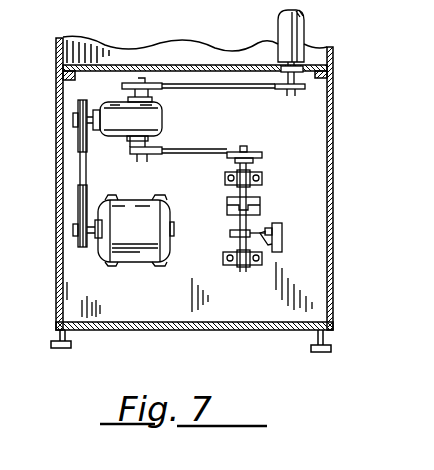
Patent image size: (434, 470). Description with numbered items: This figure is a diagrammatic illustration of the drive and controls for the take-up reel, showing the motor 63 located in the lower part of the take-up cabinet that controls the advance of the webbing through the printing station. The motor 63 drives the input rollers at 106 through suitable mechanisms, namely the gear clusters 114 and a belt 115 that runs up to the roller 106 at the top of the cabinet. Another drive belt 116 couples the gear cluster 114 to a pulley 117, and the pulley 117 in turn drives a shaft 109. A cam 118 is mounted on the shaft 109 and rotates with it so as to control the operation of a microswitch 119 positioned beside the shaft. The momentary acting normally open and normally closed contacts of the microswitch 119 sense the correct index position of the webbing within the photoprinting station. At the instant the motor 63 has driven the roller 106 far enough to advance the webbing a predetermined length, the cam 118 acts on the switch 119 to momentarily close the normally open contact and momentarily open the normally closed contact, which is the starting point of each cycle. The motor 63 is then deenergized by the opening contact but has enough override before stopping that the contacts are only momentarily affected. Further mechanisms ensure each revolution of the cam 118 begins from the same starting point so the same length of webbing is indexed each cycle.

The input rollers 106 is at (305, 22).
The gear clusters 114 is at (162, 119).
The belt 115 is at (253, 92).
The drive belt 116 is at (190, 158).
The pulley 117 is at (258, 153).
The shaft 109 is at (240, 224).
The cam 118 is at (233, 232).
The microswitch 119 is at (283, 229).
The motor 63 is at (128, 262).